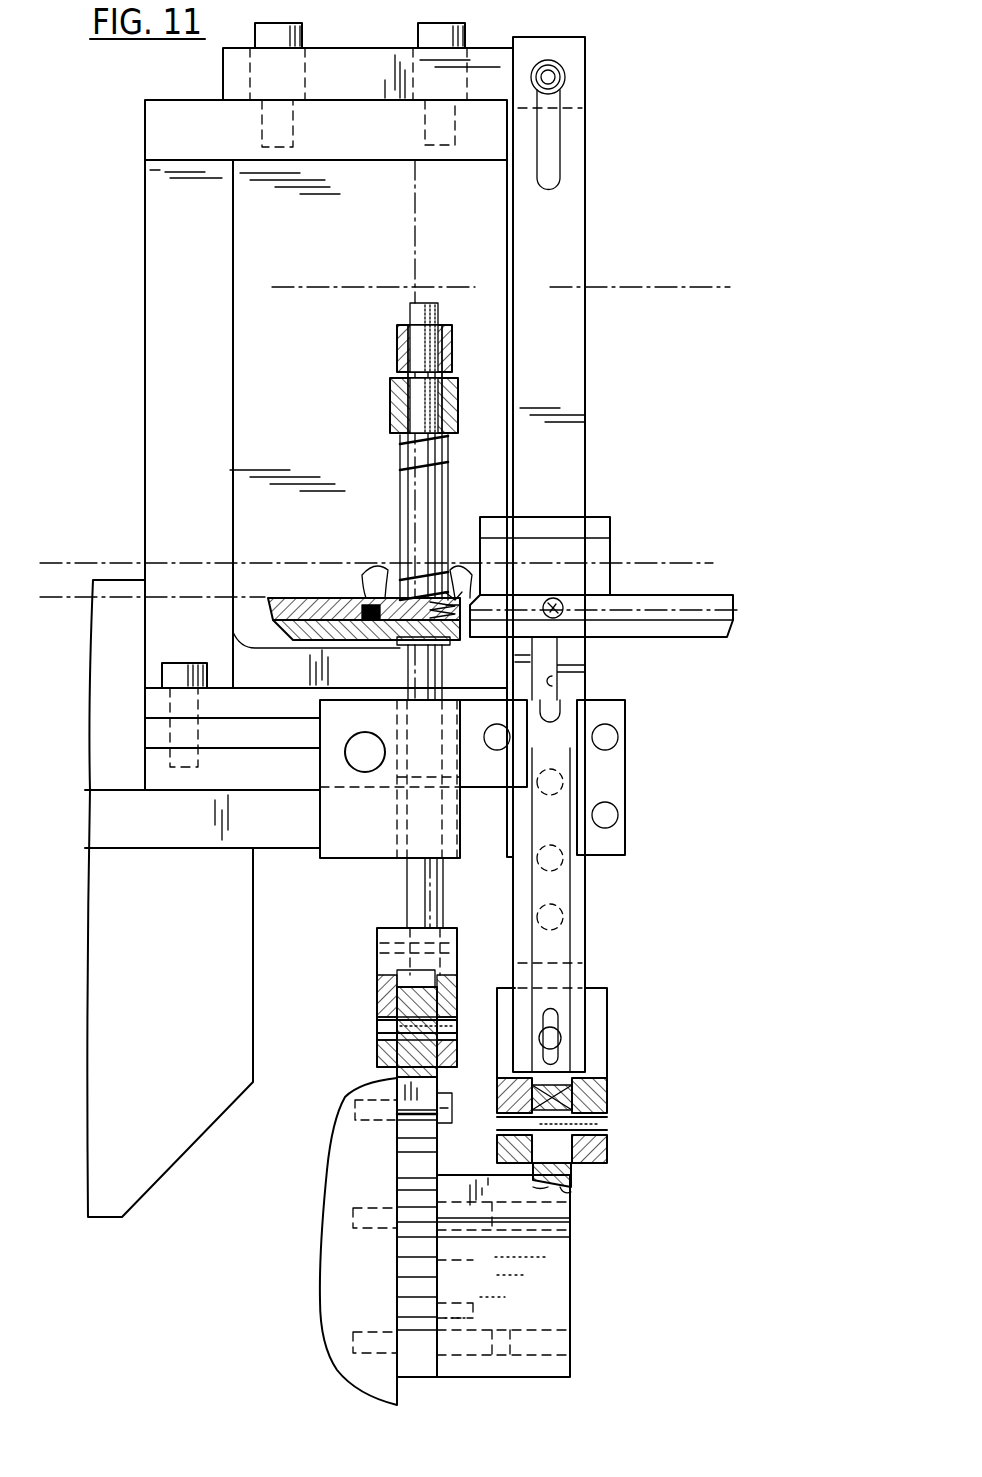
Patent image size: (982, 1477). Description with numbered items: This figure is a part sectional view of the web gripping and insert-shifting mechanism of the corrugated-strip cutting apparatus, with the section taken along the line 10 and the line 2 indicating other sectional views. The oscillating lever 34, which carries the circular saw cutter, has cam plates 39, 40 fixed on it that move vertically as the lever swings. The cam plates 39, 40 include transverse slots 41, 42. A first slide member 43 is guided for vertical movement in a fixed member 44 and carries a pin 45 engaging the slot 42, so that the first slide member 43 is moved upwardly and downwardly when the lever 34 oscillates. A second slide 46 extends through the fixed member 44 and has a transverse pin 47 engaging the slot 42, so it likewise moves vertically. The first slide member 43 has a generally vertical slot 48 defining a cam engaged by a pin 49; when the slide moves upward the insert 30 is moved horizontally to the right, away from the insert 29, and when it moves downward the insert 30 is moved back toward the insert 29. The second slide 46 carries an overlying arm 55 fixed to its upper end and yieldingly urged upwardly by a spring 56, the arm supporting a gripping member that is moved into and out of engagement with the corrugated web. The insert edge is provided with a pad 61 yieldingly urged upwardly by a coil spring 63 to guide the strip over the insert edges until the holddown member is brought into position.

The section line 10- 10 is at (284, 286).
The section line 2- 2 is at (280, 596).
The insert 29 is at (268, 625).
The insert 30 is at (640, 630).
The lever 34 is at (325, 1294).
The cam plate 39 is at (570, 1172).
The cam plate 40 is at (407, 1153).
The transverse slot 41 is at (595, 1132).
The transverse slot 42 is at (400, 1035).
The first slide member 43 is at (572, 342).
The fixed member 44 is at (622, 770).
The pin 45 is at (600, 1122).
The second slide 46 is at (412, 893).
The transverse pin 47 is at (380, 1025).
The vertical slot 48 is at (550, 682).
The pin 49 is at (565, 600).
The arm 55 is at (392, 404).
The spring 56 is at (400, 462).
The pad 61 is at (388, 578).
The coil spring 63 is at (455, 590).